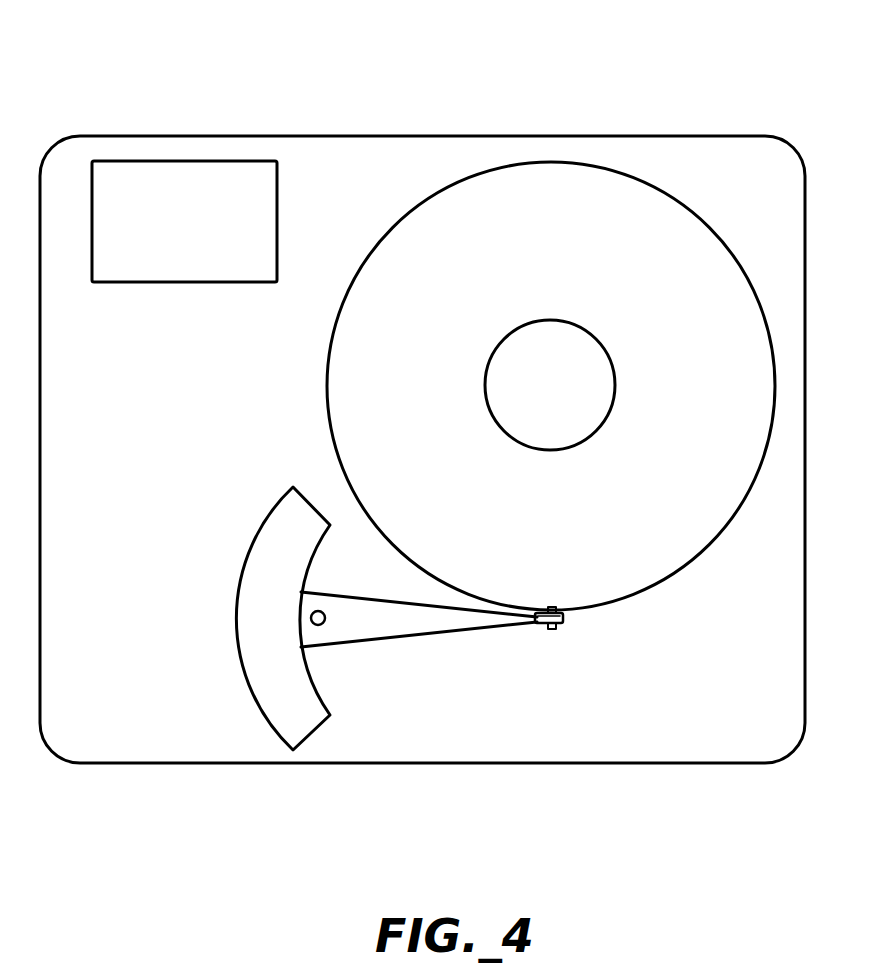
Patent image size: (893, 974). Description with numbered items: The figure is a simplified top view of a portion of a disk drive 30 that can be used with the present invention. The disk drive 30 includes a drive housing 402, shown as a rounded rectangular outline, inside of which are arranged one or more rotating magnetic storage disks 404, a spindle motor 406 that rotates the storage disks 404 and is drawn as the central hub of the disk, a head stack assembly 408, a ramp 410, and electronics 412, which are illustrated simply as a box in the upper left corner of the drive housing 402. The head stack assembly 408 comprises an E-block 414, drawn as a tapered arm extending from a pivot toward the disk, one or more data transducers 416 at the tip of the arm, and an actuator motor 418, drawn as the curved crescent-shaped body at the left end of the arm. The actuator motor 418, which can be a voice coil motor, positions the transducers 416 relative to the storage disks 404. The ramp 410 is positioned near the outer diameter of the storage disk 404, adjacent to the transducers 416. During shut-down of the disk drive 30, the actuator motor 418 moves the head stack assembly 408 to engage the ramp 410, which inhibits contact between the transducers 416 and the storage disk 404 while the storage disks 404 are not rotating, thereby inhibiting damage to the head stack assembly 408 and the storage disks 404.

The disk drive 30 is at (672, 70).
The drive housing 402 is at (325, 136).
The storage disk 404 is at (511, 227).
The spindle motor 406 is at (575, 342).
The head stack assembly 408 is at (399, 675).
The ramp 410 is at (557, 630).
The electronics 412 is at (140, 205).
The E-block 414 is at (435, 633).
The data transducer 416 is at (515, 705).
The actuator motor 418 is at (308, 723).